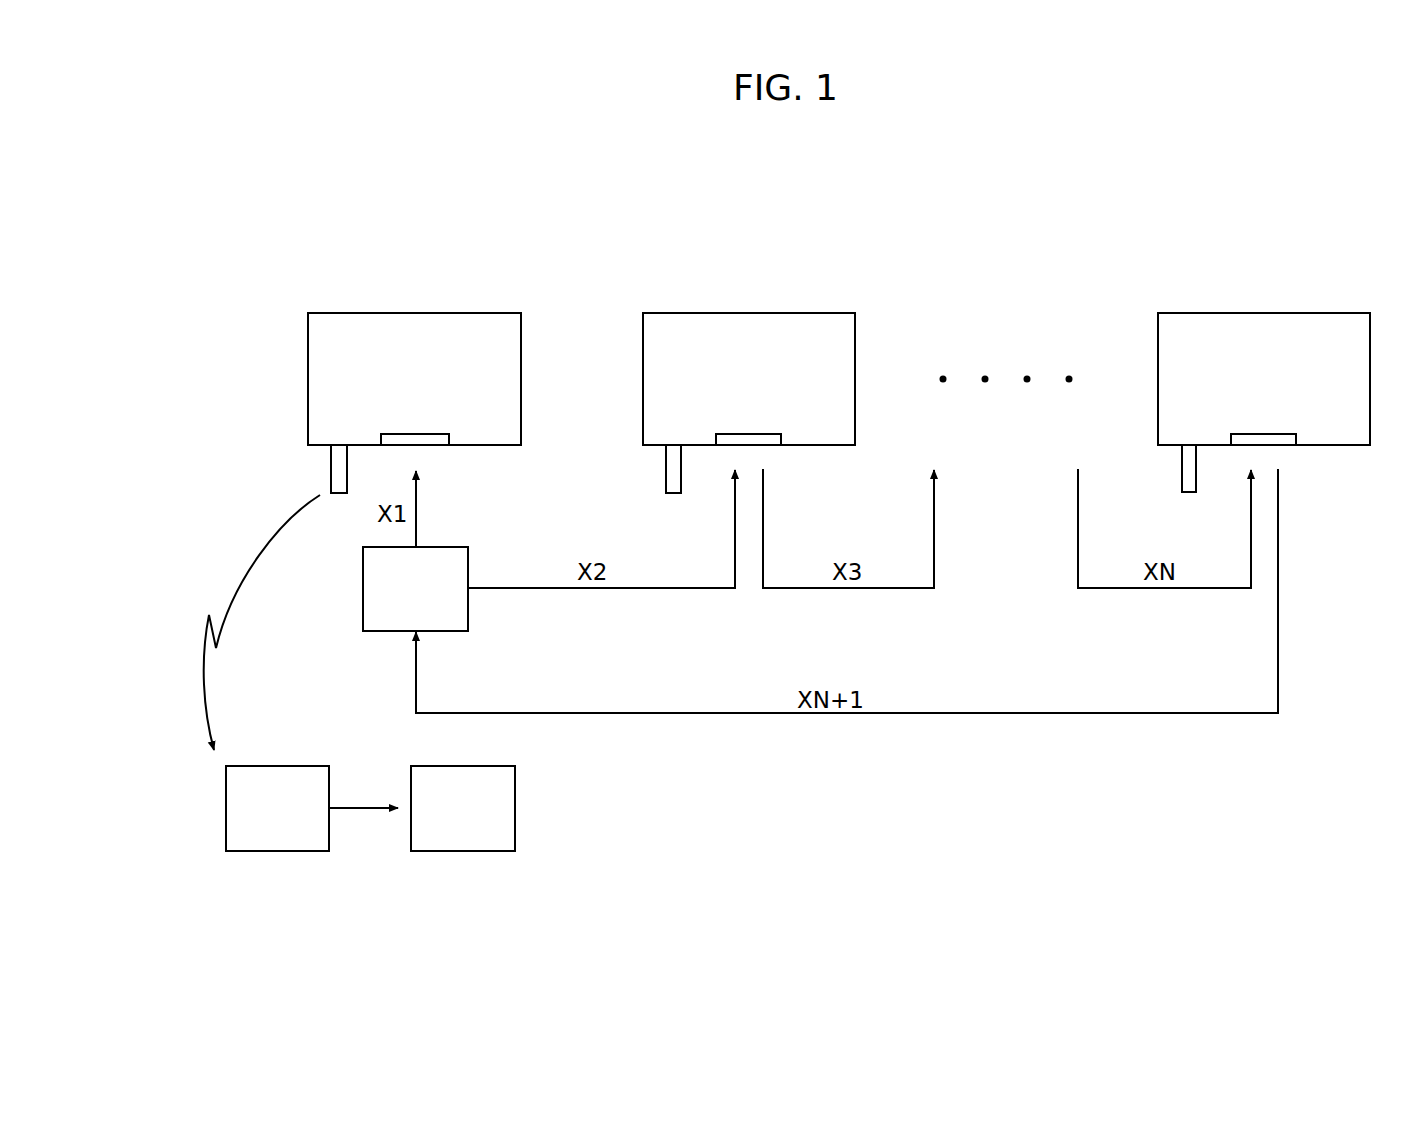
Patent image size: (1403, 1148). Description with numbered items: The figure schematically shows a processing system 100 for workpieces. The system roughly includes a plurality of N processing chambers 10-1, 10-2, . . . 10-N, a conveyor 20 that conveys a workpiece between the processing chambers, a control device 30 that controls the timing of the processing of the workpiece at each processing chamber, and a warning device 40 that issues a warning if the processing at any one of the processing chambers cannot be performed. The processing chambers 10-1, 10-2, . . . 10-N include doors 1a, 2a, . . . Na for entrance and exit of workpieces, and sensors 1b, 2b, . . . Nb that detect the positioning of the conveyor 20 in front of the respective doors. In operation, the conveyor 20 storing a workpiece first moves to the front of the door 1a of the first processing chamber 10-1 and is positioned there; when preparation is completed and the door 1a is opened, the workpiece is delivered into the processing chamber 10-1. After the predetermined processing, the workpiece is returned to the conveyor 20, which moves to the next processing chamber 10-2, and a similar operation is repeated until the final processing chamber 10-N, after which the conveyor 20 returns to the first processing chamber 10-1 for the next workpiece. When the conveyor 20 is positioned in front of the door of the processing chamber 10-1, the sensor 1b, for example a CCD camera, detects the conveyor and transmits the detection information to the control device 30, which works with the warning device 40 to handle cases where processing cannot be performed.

The processing system 100 is at (276, 220).
The first processing chamber 10-1 is at (474, 313).
The second processing chamber 10-2 is at (808, 313).
The final processing chamber 10-N is at (1322, 313).
The door 1a is at (434, 442).
The sensor 1b is at (340, 470).
The door 2a is at (768, 442).
The sensor 2b is at (672, 470).
The door Na is at (1283, 444).
The sensor Nb is at (1188, 474).
The conveyor 20 is at (363, 588).
The control device 30 is at (278, 852).
The warning device 40 is at (465, 852).